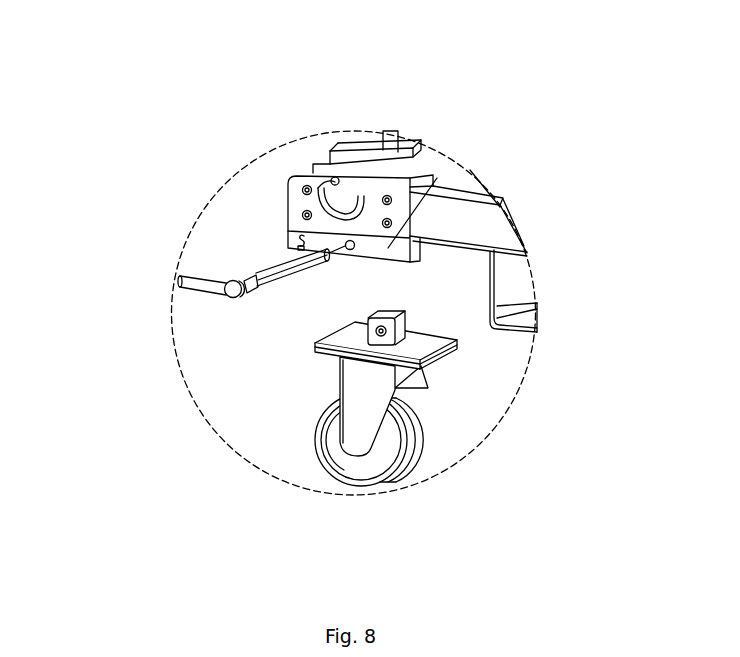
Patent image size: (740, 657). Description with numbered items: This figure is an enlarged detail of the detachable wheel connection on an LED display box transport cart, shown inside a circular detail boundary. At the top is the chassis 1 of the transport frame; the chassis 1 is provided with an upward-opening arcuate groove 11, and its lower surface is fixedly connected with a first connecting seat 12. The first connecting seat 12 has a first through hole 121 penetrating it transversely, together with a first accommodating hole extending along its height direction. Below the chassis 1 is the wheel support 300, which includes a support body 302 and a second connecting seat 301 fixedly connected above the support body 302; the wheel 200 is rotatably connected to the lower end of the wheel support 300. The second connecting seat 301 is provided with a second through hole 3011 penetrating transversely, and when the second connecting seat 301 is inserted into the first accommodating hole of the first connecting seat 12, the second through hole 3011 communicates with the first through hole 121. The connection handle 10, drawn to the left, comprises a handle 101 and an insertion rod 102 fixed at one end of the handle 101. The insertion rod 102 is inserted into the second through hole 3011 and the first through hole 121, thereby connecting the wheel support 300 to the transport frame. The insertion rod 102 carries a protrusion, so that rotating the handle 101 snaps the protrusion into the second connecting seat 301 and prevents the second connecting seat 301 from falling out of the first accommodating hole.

The chassis 1 is at (493, 194).
The connection handle 10 is at (90, 167).
The arcuate groove 11 is at (352, 141).
The first connecting seat 12 is at (460, 217).
The handle 101 is at (178, 273).
The insertion rod 102 is at (280, 275).
The first through hole 121 is at (320, 206).
The wheel 200 is at (420, 477).
The wheel support 300 is at (364, 440).
The second connecting seat 301 is at (405, 320).
The support body 302 is at (330, 393).
The second through hole 3011 is at (362, 330).